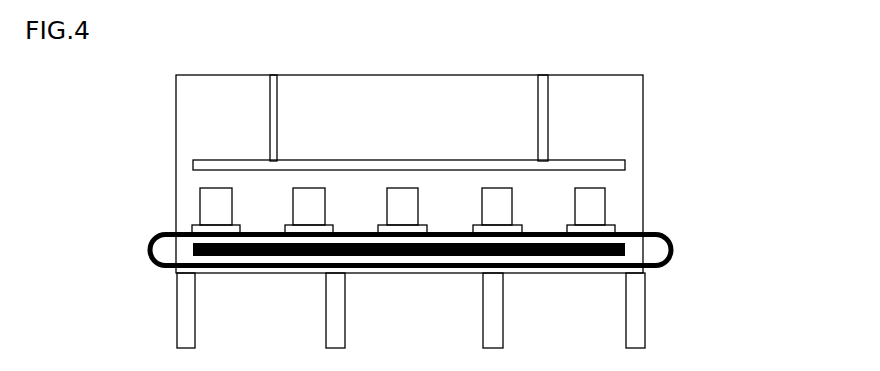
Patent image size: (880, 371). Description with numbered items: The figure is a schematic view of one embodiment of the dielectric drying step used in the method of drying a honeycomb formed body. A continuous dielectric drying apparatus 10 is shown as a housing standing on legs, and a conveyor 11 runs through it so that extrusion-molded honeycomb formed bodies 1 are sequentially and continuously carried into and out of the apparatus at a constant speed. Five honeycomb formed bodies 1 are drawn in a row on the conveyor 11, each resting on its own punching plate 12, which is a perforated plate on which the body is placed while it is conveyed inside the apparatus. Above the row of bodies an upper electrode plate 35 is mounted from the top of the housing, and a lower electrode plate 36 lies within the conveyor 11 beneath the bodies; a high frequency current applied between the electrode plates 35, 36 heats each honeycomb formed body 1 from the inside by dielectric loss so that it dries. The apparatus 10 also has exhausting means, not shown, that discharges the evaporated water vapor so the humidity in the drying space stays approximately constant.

The honeycomb formed body 1 is at (200, 205).
The continuous dielectric drying apparatus 10 is at (643, 112).
The conveyor 11 is at (148, 250).
The punching plate 12 is at (613, 226).
The electrode plate 35 is at (625, 162).
The electrode plate 36 is at (625, 250).